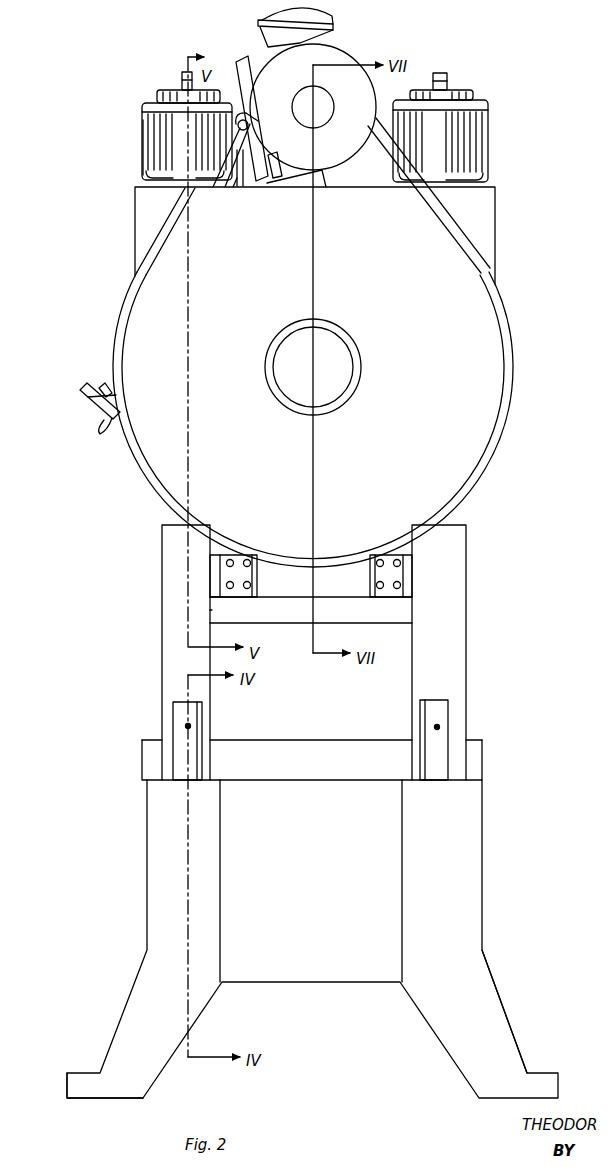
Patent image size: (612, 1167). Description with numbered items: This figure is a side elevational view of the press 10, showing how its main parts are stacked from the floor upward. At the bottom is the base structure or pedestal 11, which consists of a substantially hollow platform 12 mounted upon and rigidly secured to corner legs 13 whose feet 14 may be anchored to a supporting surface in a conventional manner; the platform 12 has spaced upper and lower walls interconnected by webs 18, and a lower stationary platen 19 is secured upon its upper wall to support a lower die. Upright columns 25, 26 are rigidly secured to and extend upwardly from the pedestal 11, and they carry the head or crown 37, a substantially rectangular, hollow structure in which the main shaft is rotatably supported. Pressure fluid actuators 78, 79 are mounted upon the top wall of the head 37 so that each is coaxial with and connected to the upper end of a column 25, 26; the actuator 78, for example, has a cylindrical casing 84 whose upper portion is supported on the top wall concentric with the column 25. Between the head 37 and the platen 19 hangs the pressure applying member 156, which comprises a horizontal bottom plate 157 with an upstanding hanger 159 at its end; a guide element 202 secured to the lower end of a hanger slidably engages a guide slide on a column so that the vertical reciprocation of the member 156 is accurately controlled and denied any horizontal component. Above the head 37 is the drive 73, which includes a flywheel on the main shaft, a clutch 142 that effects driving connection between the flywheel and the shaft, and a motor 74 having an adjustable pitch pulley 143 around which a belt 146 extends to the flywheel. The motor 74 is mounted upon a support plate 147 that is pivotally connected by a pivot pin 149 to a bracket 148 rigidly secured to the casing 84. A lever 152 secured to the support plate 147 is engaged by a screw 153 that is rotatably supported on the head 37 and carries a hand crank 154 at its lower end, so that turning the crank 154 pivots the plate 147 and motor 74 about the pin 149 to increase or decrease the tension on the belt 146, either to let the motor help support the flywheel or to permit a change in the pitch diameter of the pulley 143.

The press 10 is at (514, 513).
The base structure or pedestal 11 is at (488, 883).
The platform 12 is at (288, 986).
The corner legs 13 is at (492, 1022).
The feet 14 is at (76, 1086).
The webs 18 is at (298, 884).
The lower stationary platen 19 is at (303, 746).
The upright column 25 is at (165, 638).
The upright column 26 is at (463, 669).
The head or crown 37 is at (499, 227).
The drive 73 is at (514, 340).
The motor 74 is at (278, 42).
The pressure fluid actuator 78 is at (140, 126).
The pressure fluid actuator 79 is at (493, 133).
The cylindrical casing 84 is at (160, 149).
The clutch 142 is at (345, 362).
The adjustable pitch pulley 143 is at (337, 50).
The belt 146 is at (392, 158).
The support plate 147 is at (238, 58).
The bracket 148 is at (245, 197).
The pivot pin 149 is at (249, 120).
The lever 152 is at (258, 191).
The screw 153 is at (111, 383).
The hand crank 154 is at (88, 403).
The pressure applying member 156 is at (285, 626).
The bottom plate 157 is at (413, 613).
The hanger 159 is at (332, 599).
The guide element 202 is at (208, 578).